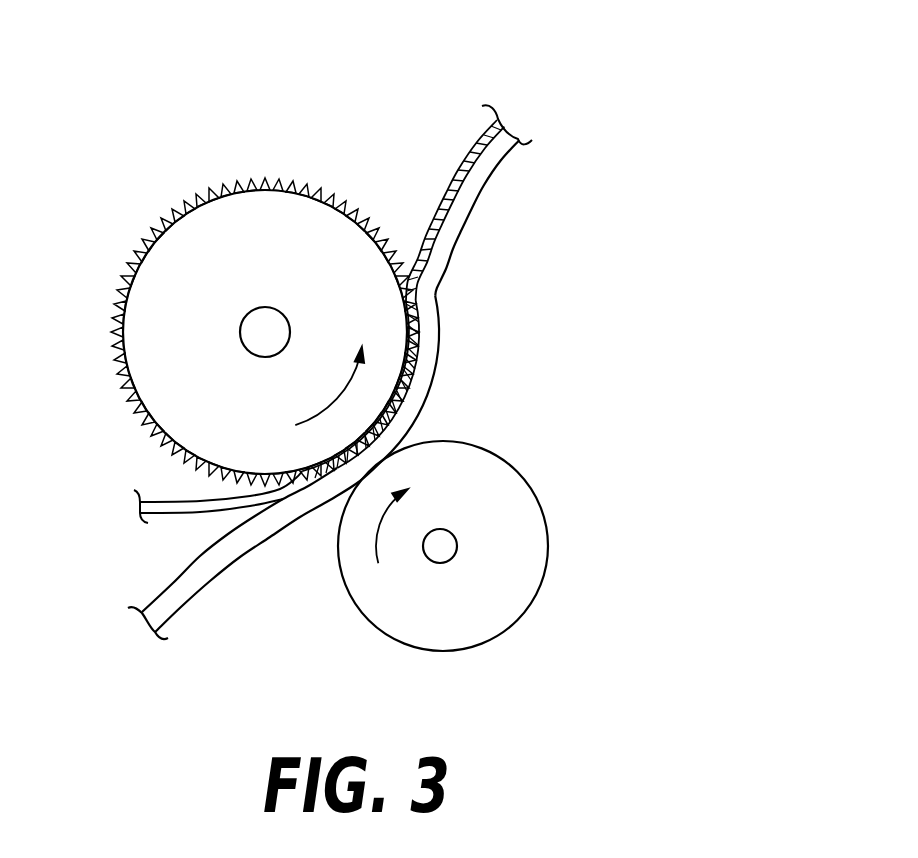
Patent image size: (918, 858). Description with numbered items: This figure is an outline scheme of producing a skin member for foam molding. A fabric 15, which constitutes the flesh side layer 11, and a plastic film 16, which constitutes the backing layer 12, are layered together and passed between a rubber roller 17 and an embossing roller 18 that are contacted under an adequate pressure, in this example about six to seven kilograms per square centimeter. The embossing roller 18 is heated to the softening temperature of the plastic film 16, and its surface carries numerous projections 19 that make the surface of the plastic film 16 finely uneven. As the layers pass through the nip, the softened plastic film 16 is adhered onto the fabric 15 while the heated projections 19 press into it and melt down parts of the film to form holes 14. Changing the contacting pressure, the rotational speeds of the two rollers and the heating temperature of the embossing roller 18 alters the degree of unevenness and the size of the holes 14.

The flesh side layer 11 is at (492, 164).
The backing layer 12 is at (481, 136).
The holes 14 is at (452, 166).
The fabric 15 is at (178, 577).
The plastic film 16 is at (167, 500).
The rubber roller 17 is at (477, 488).
The embossing roller 18 is at (282, 242).
The projections 19 is at (158, 232).